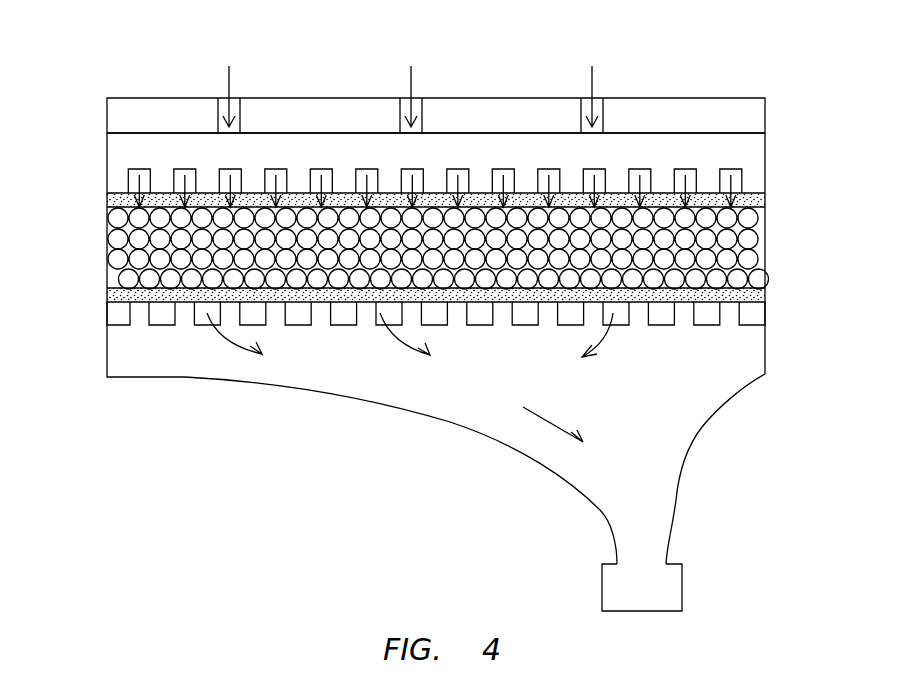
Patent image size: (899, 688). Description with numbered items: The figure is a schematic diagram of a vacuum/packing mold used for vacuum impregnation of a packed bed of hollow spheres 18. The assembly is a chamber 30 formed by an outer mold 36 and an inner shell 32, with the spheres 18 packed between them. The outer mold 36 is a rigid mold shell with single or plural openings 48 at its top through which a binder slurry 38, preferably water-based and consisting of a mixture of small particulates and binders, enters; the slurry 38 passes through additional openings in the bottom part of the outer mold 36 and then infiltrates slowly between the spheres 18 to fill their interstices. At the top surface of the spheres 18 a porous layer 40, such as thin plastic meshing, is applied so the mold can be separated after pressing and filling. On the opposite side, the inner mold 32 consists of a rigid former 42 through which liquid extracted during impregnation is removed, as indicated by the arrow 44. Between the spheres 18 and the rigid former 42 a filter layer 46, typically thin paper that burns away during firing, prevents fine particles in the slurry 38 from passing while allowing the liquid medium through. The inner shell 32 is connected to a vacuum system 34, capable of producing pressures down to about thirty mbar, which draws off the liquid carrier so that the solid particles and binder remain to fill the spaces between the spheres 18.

The chamber 30 is at (784, 36).
The inner shell 32 is at (183, 363).
The vacuum system 34 is at (682, 585).
The outer mold 36 is at (130, 122).
The binder slurry 38 is at (229, 82).
The porous layer 40 is at (765, 199).
The spheres 18 is at (755, 238).
The rigid former 42 is at (137, 316).
The arrow 44 is at (553, 423).
The filter layer 46 is at (765, 296).
The openings 48 is at (218, 116).